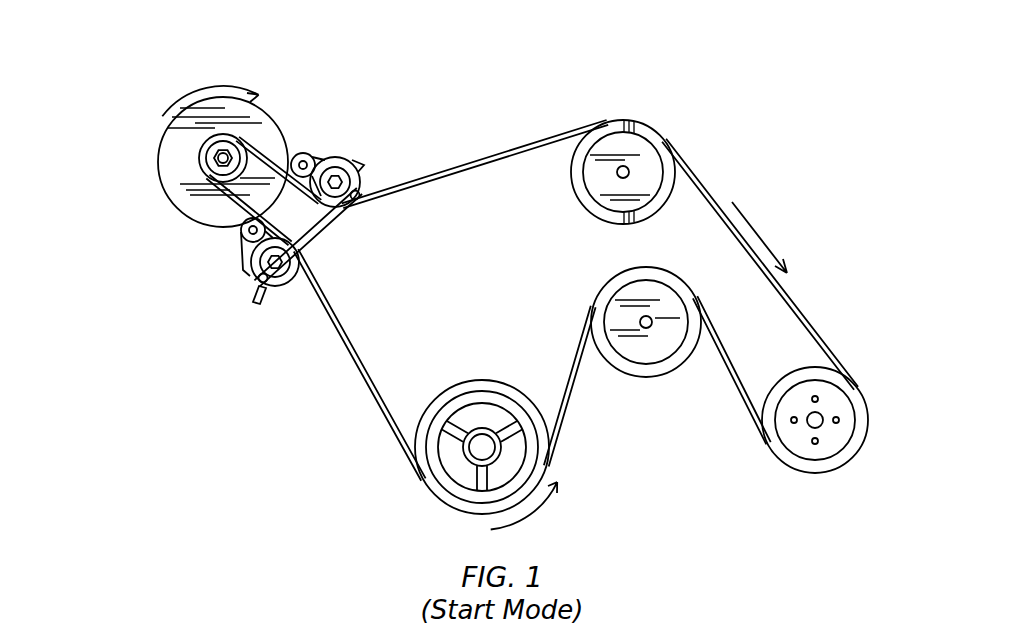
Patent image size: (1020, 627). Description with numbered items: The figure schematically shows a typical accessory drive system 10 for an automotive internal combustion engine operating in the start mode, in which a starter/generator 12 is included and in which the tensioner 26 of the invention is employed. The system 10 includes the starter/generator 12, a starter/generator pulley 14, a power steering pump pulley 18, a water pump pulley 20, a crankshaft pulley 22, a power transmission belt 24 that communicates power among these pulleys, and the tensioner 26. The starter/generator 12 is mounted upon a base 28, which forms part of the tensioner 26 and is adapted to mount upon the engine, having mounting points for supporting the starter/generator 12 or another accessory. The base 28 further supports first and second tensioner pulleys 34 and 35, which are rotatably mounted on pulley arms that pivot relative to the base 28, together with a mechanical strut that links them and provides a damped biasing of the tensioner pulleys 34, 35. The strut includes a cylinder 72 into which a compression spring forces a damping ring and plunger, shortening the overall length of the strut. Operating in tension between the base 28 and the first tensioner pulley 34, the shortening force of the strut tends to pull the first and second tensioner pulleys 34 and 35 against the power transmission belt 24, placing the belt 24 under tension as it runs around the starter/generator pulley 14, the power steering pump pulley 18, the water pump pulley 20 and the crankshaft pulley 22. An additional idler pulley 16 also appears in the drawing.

The accessory drive system 10 is at (124, 462).
The starter/generator 12 is at (180, 202).
The starter/generator pulley 14 is at (197, 162).
The idler pulley 16 is at (658, 130).
The power steering pump pulley 18 is at (808, 473).
The water pump pulley 20 is at (648, 378).
The crankshaft pulley 22 is at (428, 490).
The power transmission belt 24 is at (373, 388).
The tensioner 26 is at (411, 272).
The base 28 is at (305, 240).
The first tensioner pulley 34 is at (260, 280).
The second tensioner pulley 35 is at (331, 157).
The cylinder 72 is at (337, 220).